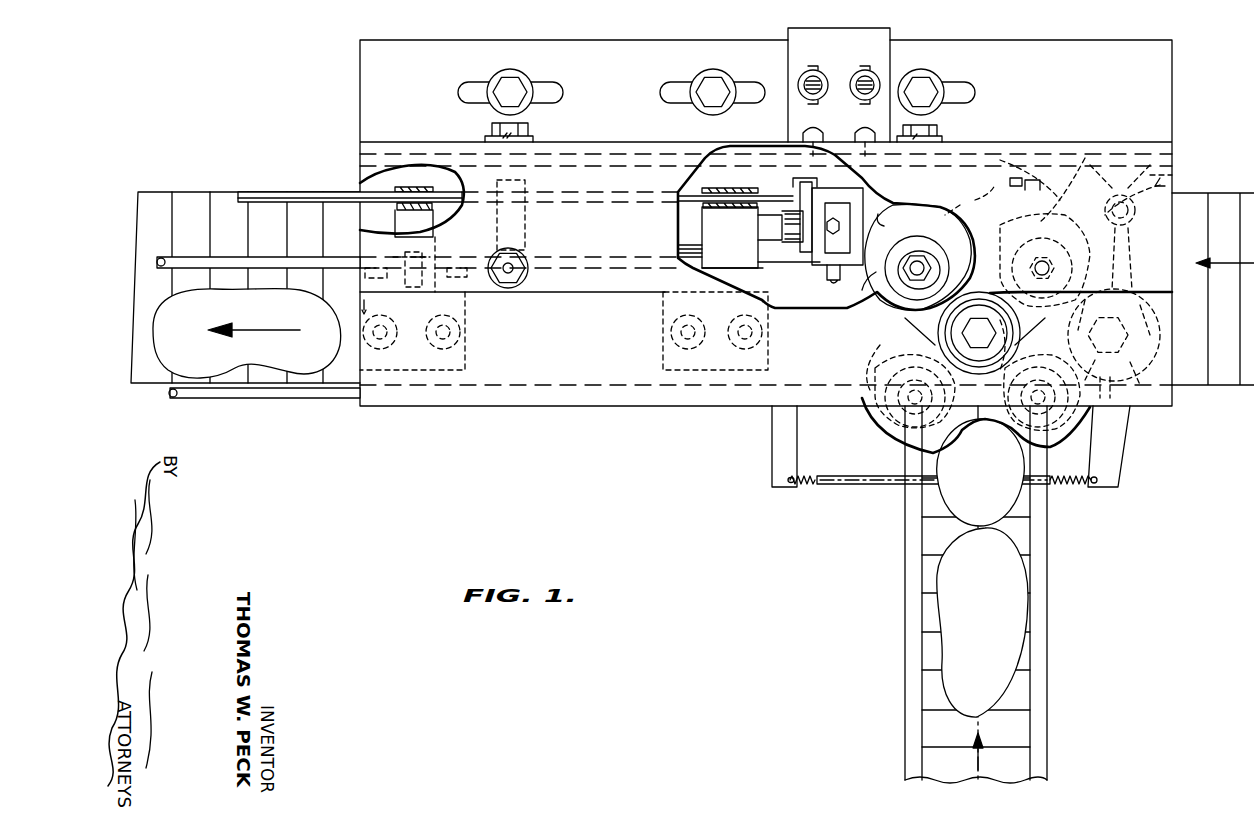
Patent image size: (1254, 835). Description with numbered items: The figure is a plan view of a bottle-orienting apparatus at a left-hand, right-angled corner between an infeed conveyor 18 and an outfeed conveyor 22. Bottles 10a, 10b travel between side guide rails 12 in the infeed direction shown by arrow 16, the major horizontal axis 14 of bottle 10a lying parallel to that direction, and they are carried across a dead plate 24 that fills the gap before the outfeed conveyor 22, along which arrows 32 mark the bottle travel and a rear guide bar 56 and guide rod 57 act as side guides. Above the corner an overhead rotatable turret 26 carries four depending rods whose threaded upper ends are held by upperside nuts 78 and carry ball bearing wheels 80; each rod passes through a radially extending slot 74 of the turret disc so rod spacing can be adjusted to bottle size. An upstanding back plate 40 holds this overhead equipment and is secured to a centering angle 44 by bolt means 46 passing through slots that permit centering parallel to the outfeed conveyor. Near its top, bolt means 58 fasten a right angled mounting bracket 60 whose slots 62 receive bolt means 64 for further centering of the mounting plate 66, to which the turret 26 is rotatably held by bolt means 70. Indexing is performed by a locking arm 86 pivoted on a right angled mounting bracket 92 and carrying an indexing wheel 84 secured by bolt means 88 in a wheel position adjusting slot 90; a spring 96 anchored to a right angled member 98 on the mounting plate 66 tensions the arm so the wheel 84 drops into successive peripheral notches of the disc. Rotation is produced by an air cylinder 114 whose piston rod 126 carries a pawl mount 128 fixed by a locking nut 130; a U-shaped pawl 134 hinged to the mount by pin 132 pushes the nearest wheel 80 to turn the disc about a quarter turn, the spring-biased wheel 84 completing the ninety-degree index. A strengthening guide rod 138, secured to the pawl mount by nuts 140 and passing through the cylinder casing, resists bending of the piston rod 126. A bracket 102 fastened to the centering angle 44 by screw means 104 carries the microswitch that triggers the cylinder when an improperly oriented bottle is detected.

The bottle 10a is at (1022, 681).
The bottle 10b is at (1020, 502).
The side guide rails 12 is at (904, 617).
The major horizontal axis 14 is at (978, 681).
The arrow 16 is at (980, 766).
The infeed conveyor 18 is at (1018, 731).
The outfeed conveyor 22 is at (196, 195).
The dead plate 24 is at (900, 467).
The turret 26 is at (878, 422).
The direction of movement arrow 32 is at (248, 335).
The back plate 40 is at (360, 158).
The centering angle 44 is at (363, 85).
The bolt means 46 is at (518, 87).
The rear guide bar 56 is at (228, 263).
The guide rod 57 is at (278, 400).
The bolt means 58 is at (528, 131).
The right angled mounting bracket 60 is at (747, 142).
The slots 62 is at (532, 207).
The bolt means 64 is at (525, 260).
The mounting plate 66 is at (437, 154).
The bolt means 70 is at (993, 300).
The radially extending slot 74 is at (920, 332).
The upperside nuts 78 is at (940, 260).
The bearings 80 is at (942, 244).
The bearing 84 is at (1121, 391).
The locking arm 86 is at (1120, 475).
The bolt means 88 is at (1160, 338).
The wheel position adjusting slot 90 is at (1123, 236).
The right angled mounting bracket 92 is at (1172, 180).
The spring 96 is at (859, 490).
The right angled member 98 is at (766, 443).
The bracket 102 is at (890, 32).
The screw means 104 is at (840, 123).
The air cylinder 114 is at (690, 225).
The piston rod 126 is at (752, 245).
The pawl mount 128 is at (810, 270).
The locking nut 130 is at (761, 264).
The pin 132 is at (858, 301).
The pawl 134 is at (862, 194).
The strengthening guide rod 138 is at (294, 188).
The nuts 140 is at (800, 179).